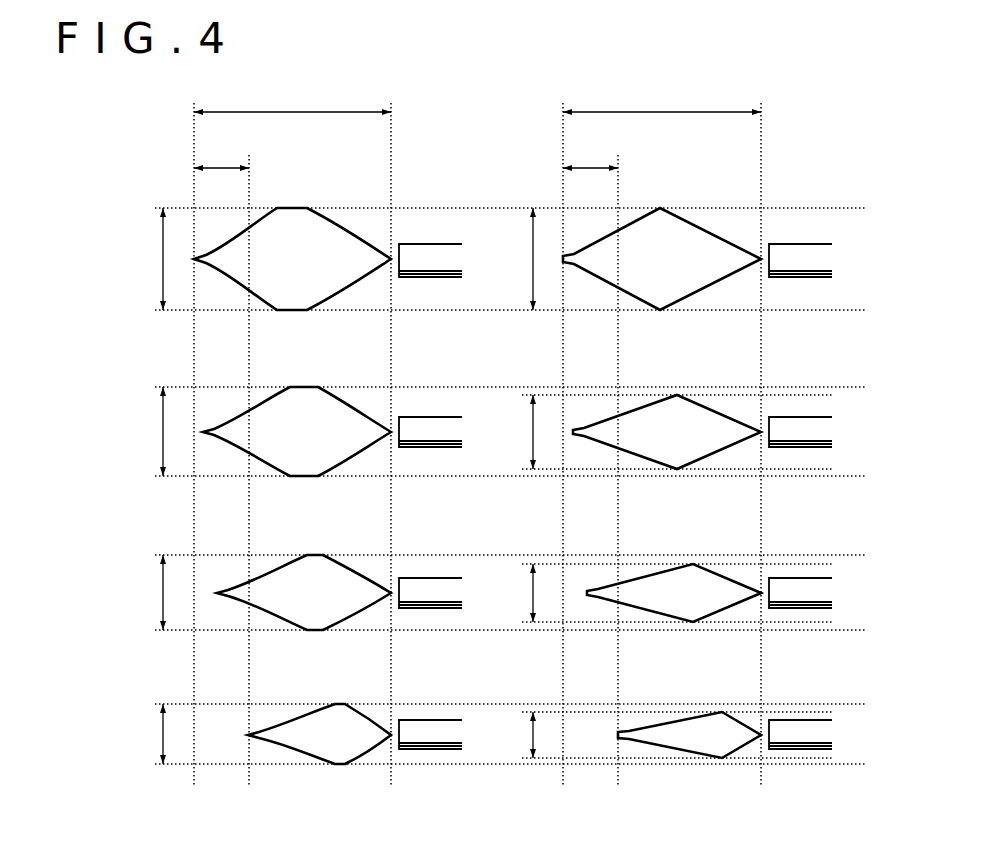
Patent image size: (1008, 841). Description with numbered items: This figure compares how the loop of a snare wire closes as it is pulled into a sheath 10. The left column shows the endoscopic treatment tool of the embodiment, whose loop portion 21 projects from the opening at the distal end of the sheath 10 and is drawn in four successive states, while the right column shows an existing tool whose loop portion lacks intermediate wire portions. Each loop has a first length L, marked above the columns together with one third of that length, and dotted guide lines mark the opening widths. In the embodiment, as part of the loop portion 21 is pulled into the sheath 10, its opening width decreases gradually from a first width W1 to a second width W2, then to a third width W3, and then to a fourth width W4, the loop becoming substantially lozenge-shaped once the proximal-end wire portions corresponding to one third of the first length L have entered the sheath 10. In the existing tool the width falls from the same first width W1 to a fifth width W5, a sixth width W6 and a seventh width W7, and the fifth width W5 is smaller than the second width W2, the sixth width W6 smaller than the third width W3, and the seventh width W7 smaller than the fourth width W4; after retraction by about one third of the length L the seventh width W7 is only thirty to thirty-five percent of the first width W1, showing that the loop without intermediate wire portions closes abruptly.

The sheath 10 is at (441, 244).
The loop portion 21 is at (340, 223).
The first length L is at (477, 129).
The first width W1 is at (335, 259).
The second width W2 is at (150, 431).
The third width W3 is at (150, 592).
The fourth width W4 is at (150, 734).
The fifth width W5 is at (521, 432).
The sixth width W6 is at (521, 593).
The seventh width W7 is at (521, 735).